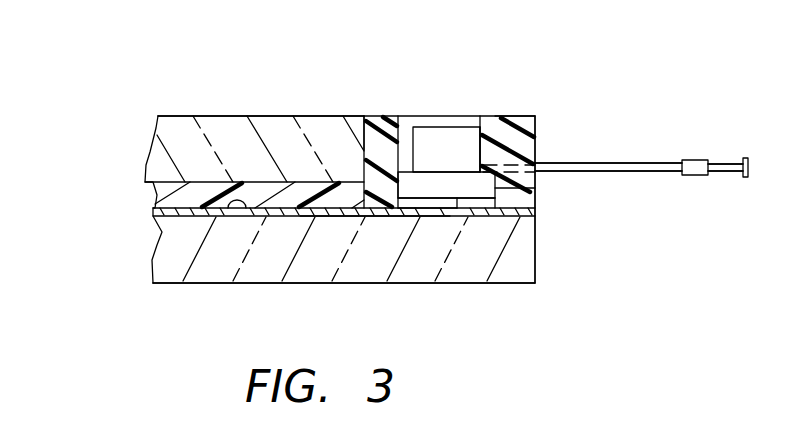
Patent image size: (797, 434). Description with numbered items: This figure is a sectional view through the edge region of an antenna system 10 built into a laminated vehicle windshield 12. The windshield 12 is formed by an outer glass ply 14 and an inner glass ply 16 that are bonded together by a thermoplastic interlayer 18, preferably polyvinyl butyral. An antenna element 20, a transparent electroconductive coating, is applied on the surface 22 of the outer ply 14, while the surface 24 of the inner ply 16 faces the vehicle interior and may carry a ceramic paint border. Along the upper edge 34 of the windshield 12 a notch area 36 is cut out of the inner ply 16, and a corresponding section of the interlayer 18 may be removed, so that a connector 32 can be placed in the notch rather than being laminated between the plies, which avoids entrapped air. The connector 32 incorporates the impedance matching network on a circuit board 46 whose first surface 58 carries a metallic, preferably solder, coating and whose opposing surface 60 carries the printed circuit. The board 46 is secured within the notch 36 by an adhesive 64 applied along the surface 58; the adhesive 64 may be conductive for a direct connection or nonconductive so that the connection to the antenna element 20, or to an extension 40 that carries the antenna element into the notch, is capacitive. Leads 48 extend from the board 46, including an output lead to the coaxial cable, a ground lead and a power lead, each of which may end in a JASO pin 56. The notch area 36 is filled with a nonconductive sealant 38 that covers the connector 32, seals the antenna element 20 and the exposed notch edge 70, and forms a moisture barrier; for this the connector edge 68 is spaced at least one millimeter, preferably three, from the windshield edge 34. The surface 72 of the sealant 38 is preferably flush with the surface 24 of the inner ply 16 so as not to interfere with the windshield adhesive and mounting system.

The antenna system 10 is at (113, 92).
The laminated vehicle windshield 12 is at (258, 284).
The outer glass ply 14 is at (168, 253).
The inner glass ply 16 is at (158, 158).
The thermoplastic interlayer 18 is at (153, 188).
The antenna element 20 is at (153, 213).
The surface of glass ply 22 is at (228, 208).
The surface of inner ply 24 is at (180, 115).
The connector 32 is at (416, 127).
The upper edge of windshield 34 is at (536, 232).
The notch area 36 is at (355, 183).
The sealant material 38 is at (537, 115).
The extension 40 is at (373, 217).
The circuit board 46 is at (403, 128).
The output lead 48 is at (580, 163).
The JASO pin 56 is at (722, 173).
The first surface 58 is at (457, 199).
The opposing surface 60 is at (477, 115).
The adhesive 64 is at (428, 208).
The edge of connector 68 is at (535, 190).
The notch edge 70 is at (365, 130).
The surface of sealant 72 is at (463, 172).